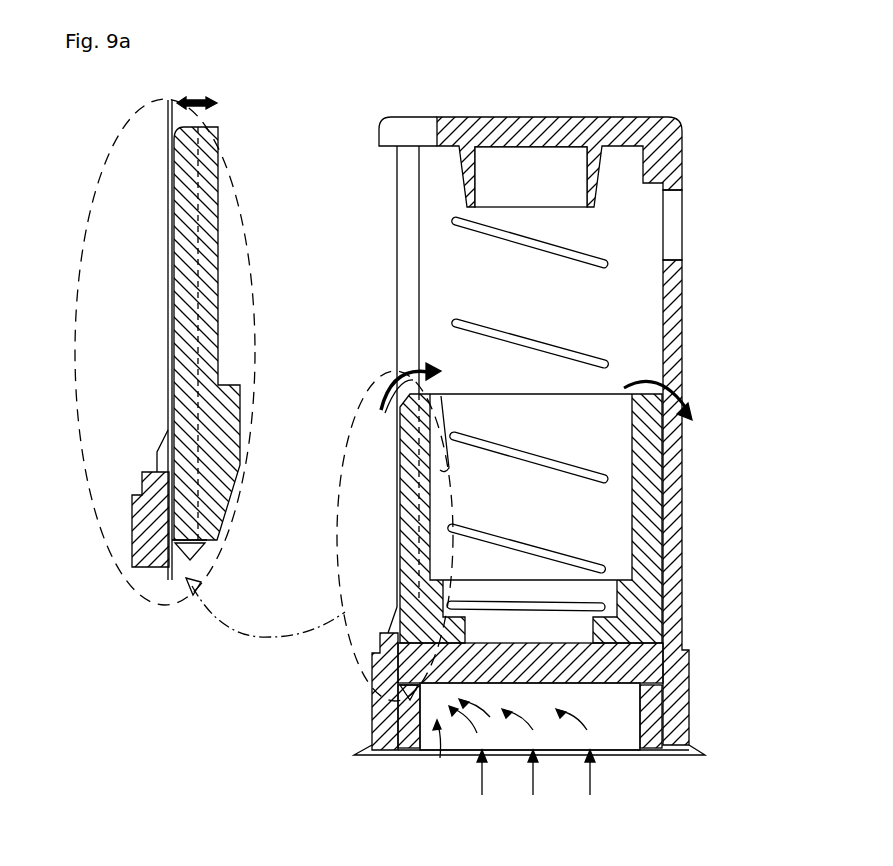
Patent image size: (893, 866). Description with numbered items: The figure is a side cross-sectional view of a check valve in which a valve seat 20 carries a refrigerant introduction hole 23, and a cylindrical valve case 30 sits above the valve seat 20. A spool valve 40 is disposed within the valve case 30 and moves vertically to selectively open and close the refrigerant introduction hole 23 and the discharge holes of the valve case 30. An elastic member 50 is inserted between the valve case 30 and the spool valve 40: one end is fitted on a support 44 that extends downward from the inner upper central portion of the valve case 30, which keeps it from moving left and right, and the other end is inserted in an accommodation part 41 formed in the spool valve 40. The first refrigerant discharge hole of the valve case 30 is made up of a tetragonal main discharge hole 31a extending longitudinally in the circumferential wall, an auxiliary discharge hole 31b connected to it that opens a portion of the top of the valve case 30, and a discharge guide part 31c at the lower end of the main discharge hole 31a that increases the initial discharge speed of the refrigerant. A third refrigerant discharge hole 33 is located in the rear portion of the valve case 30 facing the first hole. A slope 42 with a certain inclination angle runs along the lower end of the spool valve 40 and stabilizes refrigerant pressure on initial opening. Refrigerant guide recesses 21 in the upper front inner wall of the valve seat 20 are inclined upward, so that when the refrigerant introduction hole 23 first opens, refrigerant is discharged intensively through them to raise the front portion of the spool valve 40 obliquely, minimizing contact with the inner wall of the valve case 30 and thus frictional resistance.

The valve case 30 is at (620, 118).
The main discharge hole 31a is at (412, 280).
The auxiliary discharge hole 31b is at (405, 128).
The discharge guide part 31c is at (392, 625).
The third refrigerant discharge hole 33 is at (680, 218).
The support 44 is at (472, 170).
The spool valve 40 is at (650, 490).
The accommodation part 41 is at (450, 472).
The slope 42 is at (168, 540).
The elastic member 50 is at (590, 347).
The valve seat 20 is at (688, 710).
The refrigerant guide recess 21 is at (404, 692).
The refrigerant introduction hole 23 is at (650, 712).